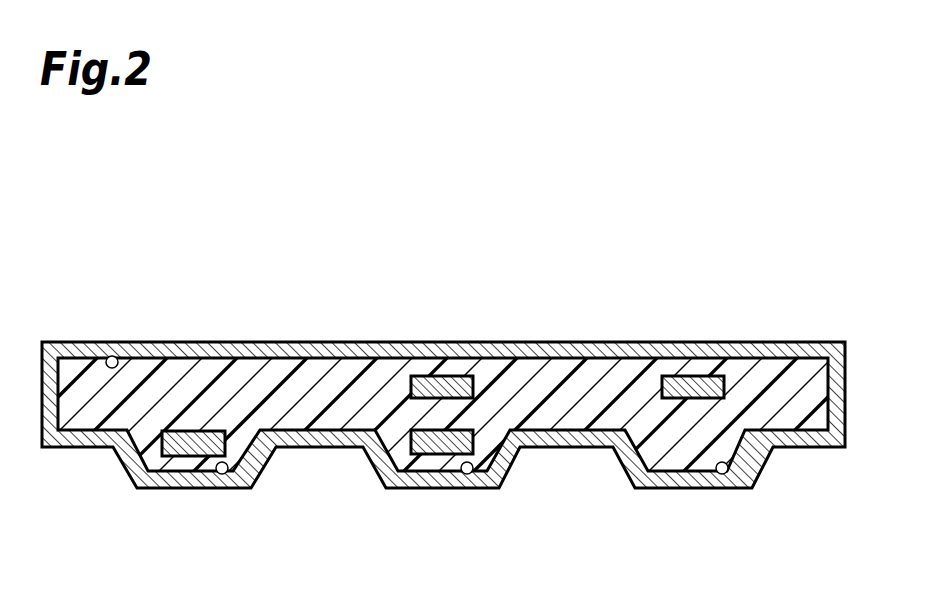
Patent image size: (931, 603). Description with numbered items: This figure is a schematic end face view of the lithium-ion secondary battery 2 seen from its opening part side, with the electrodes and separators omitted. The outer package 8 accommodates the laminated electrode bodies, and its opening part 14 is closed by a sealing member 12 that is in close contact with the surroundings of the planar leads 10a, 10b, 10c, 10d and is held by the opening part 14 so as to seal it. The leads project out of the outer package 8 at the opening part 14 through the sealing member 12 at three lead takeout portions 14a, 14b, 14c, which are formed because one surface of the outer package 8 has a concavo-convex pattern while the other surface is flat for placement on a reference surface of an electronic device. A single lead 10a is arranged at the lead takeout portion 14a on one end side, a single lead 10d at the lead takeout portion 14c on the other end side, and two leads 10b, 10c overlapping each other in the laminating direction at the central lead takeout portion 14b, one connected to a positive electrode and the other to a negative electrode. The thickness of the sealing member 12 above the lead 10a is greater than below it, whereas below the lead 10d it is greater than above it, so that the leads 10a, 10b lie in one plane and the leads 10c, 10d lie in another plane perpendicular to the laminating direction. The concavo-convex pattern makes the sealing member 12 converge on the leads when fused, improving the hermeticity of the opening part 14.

The battery 2 is at (163, 273).
The outer package 8 is at (540, 341).
The sealing member 12 is at (265, 378).
The lead 10a is at (173, 457).
The lead 10b is at (427, 455).
The lead 10c is at (442, 376).
The lead 10d is at (687, 376).
The opening part 14 is at (111, 357).
The lead takeout portion 14a is at (225, 473).
The lead takeout portion 14b is at (470, 473).
The lead takeout portion 14c is at (725, 473).